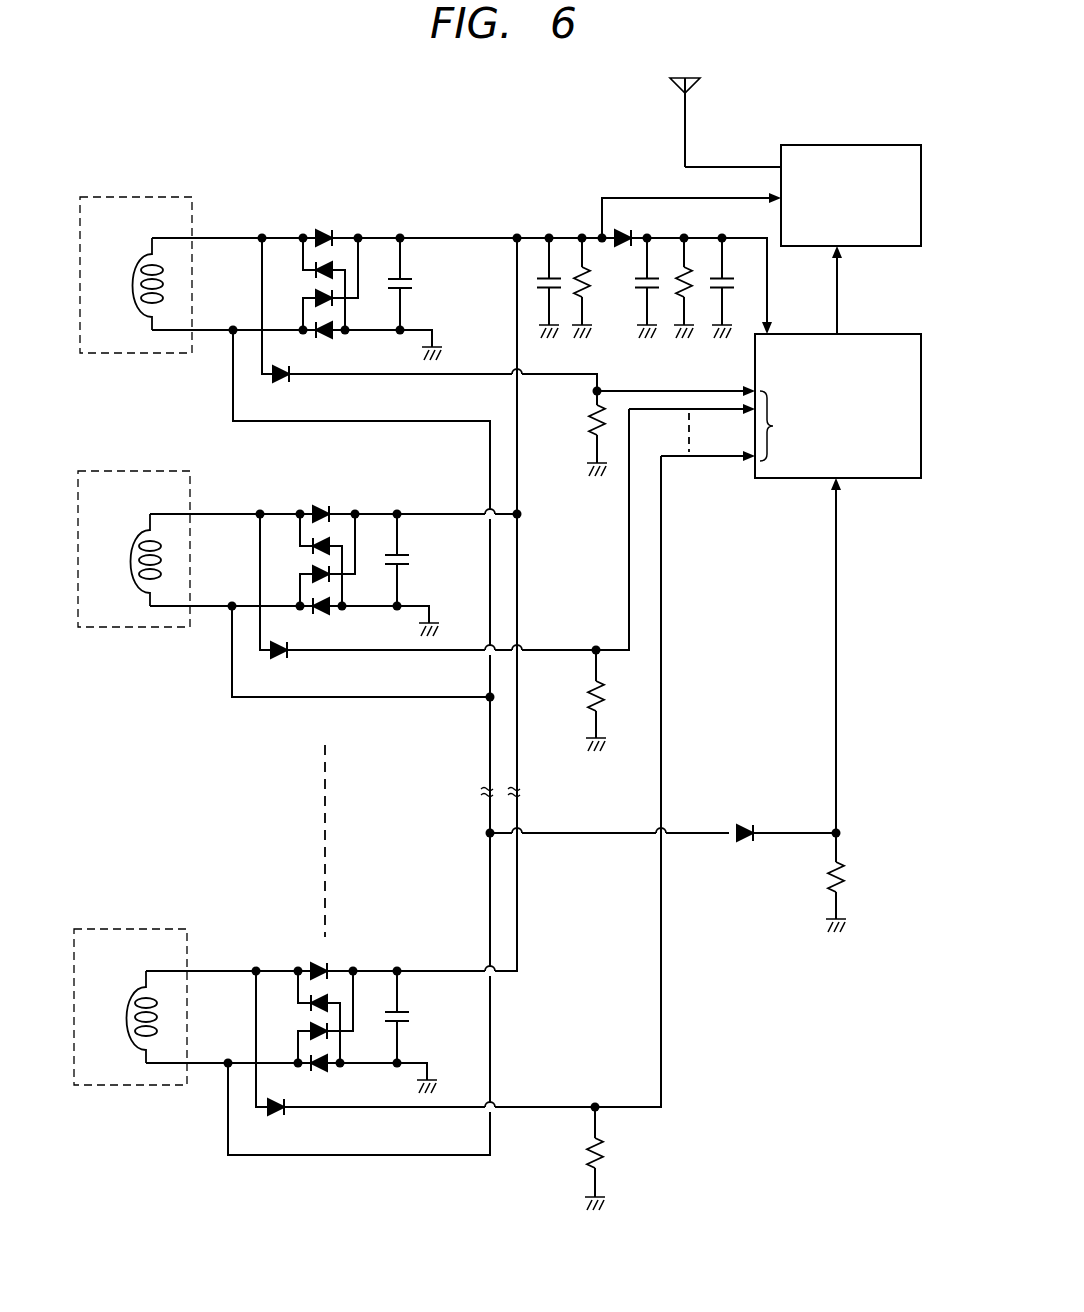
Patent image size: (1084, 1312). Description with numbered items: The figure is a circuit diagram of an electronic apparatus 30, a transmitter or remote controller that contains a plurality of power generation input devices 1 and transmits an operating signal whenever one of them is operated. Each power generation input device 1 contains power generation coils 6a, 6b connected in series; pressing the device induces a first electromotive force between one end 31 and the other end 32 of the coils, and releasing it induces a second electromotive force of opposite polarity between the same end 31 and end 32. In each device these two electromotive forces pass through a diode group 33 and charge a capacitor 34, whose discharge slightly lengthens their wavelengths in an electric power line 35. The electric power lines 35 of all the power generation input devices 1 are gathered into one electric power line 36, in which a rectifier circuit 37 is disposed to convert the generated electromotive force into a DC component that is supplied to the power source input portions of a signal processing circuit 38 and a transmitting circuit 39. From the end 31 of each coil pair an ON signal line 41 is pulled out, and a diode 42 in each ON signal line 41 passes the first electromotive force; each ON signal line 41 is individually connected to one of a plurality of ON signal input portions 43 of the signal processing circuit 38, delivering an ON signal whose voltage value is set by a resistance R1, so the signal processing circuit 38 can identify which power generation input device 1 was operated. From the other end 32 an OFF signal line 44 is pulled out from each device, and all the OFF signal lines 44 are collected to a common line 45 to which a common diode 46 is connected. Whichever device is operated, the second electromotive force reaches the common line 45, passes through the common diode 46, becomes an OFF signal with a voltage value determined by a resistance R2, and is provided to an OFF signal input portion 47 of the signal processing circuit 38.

The power generation input device 1 is at (143, 188).
The power generation coil 6a is at (121, 689).
The power generation coil 6b is at (133, 322).
The electronic apparatus 30 is at (441, 156).
The end 31 is at (222, 236).
The end 32 is at (213, 336).
The diode group 33 is at (325, 236).
The capacitor 34 is at (414, 280).
The electric power line 35 is at (455, 236).
The electric power line 36 is at (535, 236).
The rectifier circuit 37 is at (667, 218).
The signal processing circuit 38 is at (770, 481).
The transmitting circuit 39 is at (850, 143).
The ON signal line 41 is at (387, 378).
The diode 42 is at (290, 382).
The ON signal input portion 43 is at (736, 438).
The OFF signal line 44 is at (425, 425).
The common line 45 is at (600, 838).
The common diode 46 is at (743, 818).
The OFF signal input portion 47 is at (862, 480).
The resistance R1 is at (578, 799).
The resistance R2 is at (818, 882).